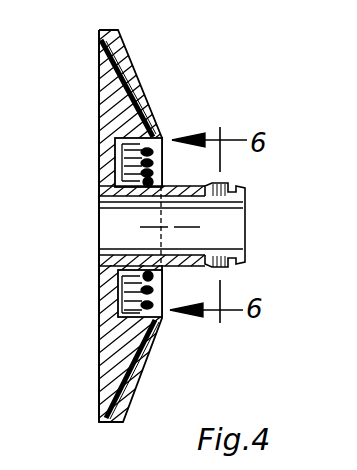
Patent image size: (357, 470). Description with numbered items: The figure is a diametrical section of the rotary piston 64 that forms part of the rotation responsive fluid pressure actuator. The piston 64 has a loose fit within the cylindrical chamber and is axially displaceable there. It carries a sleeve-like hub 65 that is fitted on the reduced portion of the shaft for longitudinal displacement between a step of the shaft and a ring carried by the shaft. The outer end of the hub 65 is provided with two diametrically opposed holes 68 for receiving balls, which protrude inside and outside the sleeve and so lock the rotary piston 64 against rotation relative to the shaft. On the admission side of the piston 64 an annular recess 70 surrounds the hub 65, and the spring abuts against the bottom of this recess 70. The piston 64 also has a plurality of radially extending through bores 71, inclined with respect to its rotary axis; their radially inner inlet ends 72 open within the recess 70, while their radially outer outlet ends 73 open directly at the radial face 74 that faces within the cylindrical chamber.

The rotary piston 64 is at (132, 62).
The sleeve-like hub 65 is at (243, 232).
The holes 68 is at (233, 190).
The annular recess 70 is at (118, 155).
The through bores 71 is at (160, 118).
The inlet ends 72 is at (160, 137).
The outlet ends 73 is at (100, 50).
The radial face 74 is at (100, 102).